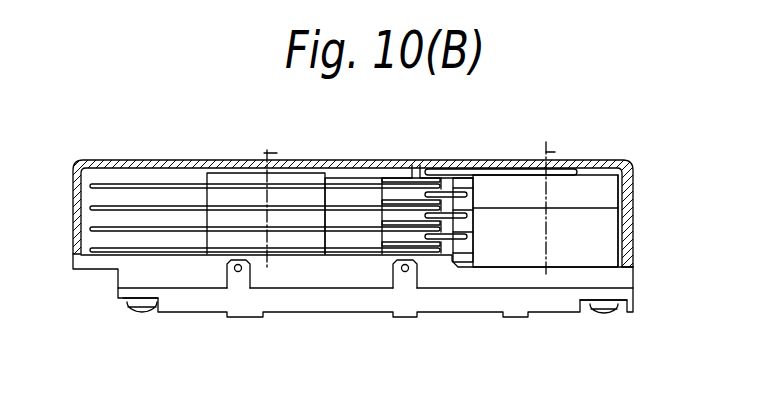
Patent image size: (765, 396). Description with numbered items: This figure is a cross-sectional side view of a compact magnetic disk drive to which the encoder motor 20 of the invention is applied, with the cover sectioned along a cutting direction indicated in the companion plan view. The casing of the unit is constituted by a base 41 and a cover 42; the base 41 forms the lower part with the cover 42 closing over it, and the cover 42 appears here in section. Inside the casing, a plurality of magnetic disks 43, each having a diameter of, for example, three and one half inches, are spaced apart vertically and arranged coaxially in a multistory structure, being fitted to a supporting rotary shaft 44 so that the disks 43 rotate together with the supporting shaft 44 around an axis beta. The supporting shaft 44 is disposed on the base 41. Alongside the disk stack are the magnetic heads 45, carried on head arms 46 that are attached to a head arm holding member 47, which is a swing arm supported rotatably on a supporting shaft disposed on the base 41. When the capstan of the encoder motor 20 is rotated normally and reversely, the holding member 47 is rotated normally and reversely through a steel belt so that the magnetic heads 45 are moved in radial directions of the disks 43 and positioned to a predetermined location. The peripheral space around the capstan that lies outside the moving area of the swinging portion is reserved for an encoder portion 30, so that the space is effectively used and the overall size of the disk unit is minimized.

The encoder motor 20 is at (602, 177).
The encoder portion 30 is at (612, 195).
The base 41 is at (302, 283).
The cover 42 is at (216, 160).
The magnetic disks 43 is at (343, 178).
The supporting rotary shaft 44 is at (243, 173).
The magnetic heads 45 is at (382, 177).
The head arms 46 is at (408, 170).
The head arm holding member 47 is at (452, 170).